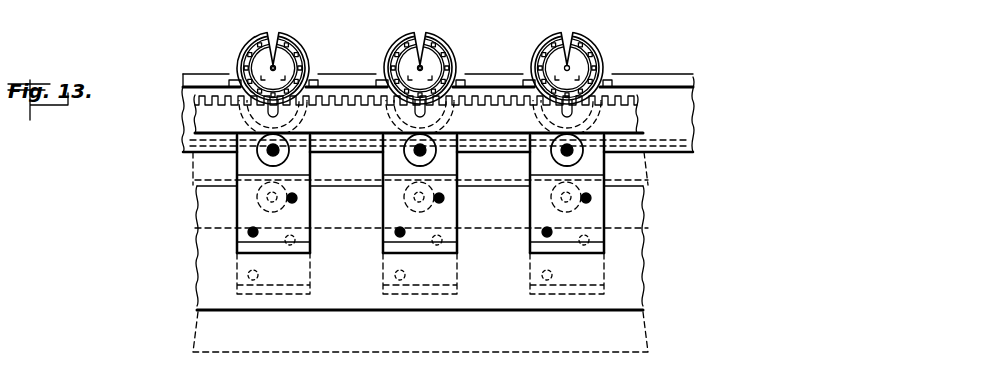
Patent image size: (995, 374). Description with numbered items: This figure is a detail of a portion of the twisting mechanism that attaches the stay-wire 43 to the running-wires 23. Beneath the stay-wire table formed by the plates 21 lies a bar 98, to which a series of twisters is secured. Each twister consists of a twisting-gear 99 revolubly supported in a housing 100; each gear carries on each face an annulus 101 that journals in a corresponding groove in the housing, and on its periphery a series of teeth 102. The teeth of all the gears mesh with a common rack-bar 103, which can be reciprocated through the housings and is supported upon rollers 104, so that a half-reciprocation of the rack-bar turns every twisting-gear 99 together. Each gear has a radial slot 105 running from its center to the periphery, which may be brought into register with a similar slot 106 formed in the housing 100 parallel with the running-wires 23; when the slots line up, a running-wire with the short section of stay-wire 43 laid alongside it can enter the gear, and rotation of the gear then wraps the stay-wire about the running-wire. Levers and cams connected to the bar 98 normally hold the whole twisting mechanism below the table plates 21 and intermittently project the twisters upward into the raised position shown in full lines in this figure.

The plate 21 is at (193, 77).
The running-wire 23 is at (283, 70).
The stay-wire 43 is at (253, 51).
The bar 98 is at (623, 287).
The twisting-gear 99 is at (298, 48).
The housing 100 is at (243, 76).
The annulus 101 is at (458, 67).
The teeth 102 is at (603, 66).
The rack-bar 103 is at (418, 102).
The roller 104 is at (425, 142).
The radial slot 105 is at (275, 65).
The slot 106 is at (420, 66).